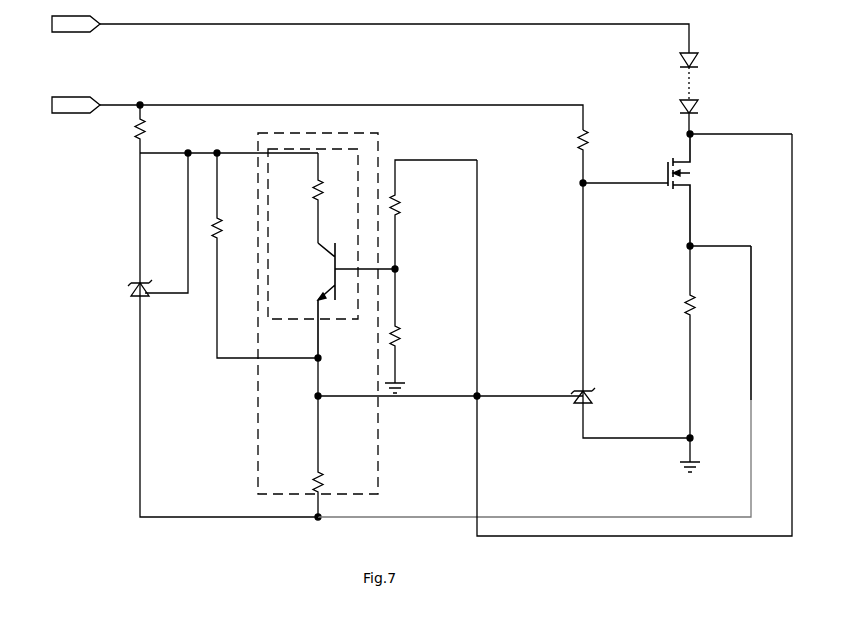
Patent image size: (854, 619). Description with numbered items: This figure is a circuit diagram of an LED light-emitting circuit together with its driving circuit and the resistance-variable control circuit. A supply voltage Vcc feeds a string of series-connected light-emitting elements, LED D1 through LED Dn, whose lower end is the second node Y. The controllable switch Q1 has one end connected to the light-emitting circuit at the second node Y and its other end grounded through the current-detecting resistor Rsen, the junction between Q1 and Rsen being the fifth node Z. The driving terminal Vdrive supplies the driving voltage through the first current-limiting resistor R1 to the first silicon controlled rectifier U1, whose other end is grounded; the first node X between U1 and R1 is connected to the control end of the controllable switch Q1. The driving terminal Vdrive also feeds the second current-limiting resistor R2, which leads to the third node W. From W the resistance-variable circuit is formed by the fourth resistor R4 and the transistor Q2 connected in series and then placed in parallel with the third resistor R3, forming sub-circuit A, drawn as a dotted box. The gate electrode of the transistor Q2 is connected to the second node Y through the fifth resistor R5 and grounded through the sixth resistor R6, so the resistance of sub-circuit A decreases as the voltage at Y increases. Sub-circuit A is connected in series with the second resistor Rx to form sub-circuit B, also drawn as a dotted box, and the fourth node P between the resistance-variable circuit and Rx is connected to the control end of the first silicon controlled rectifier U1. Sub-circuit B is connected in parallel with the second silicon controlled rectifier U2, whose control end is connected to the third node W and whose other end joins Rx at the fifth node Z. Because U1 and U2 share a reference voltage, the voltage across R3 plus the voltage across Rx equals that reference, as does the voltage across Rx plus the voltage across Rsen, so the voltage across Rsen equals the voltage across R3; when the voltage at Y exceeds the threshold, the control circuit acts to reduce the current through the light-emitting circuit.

The supply voltage Vcc is at (76, 33).
The driving terminal Vdrive is at (74, 116).
The first current-limiting resistor R1 is at (595, 156).
The second current-limiting resistor R2 is at (153, 129).
The third resistor R3 is at (265, 255).
The fourth resistor R4 is at (334, 198).
The fifth resistor R5 is at (433, 214).
The sixth resistor R6 is at (405, 331).
The second resistor Rx is at (305, 456).
The resistor Rsen is at (669, 342).
The controllable switch Q1 is at (694, 190).
The transistor Q2 is at (339, 300).
The first silicon controlled rectifier U1 is at (630, 310).
The second silicon controlled rectifier U2 is at (138, 224).
The LED D1 is at (677, 61).
The LED Dn is at (677, 117).
The sub-circuit A is at (338, 166).
The sub-circuit B is at (337, 465).
The third node W is at (229, 144).
The fourth node P is at (440, 381).
The first node X is at (608, 186).
The second node Y is at (727, 136).
The fifth node Z is at (709, 246).